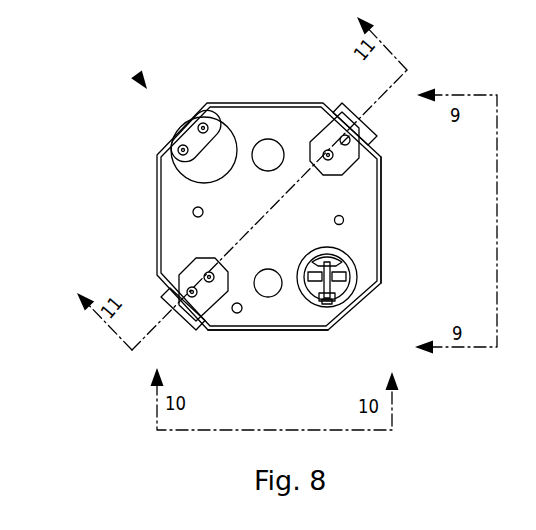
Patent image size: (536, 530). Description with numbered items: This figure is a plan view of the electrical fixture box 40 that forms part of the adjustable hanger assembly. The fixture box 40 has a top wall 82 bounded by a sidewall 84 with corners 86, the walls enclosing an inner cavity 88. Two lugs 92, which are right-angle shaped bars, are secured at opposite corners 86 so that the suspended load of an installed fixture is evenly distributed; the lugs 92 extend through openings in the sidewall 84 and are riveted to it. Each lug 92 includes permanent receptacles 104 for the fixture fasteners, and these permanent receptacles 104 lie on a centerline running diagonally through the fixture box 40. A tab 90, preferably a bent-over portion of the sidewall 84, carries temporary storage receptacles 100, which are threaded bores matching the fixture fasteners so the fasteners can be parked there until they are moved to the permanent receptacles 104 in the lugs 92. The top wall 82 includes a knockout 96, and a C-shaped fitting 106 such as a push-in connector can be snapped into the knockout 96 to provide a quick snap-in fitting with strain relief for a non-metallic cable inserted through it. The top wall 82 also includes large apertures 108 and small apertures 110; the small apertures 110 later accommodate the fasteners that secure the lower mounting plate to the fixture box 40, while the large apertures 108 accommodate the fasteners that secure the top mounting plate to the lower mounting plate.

The fixture box 40 is at (143, 84).
The top wall 82 is at (347, 202).
The sidewall 84 is at (318, 332).
The corners 86 is at (370, 147).
The inner cavity 88 is at (381, 170).
The tab 90 is at (216, 118).
The lugs 92 is at (310, 142).
The knockout 96 is at (188, 174).
The temporary storage receptacles 100 is at (199, 126).
The permanent receptacles 104 is at (209, 282).
The C-shaped fitting 106 is at (356, 262).
The large apertures 108 is at (262, 169).
The small apertures 110 is at (344, 219).